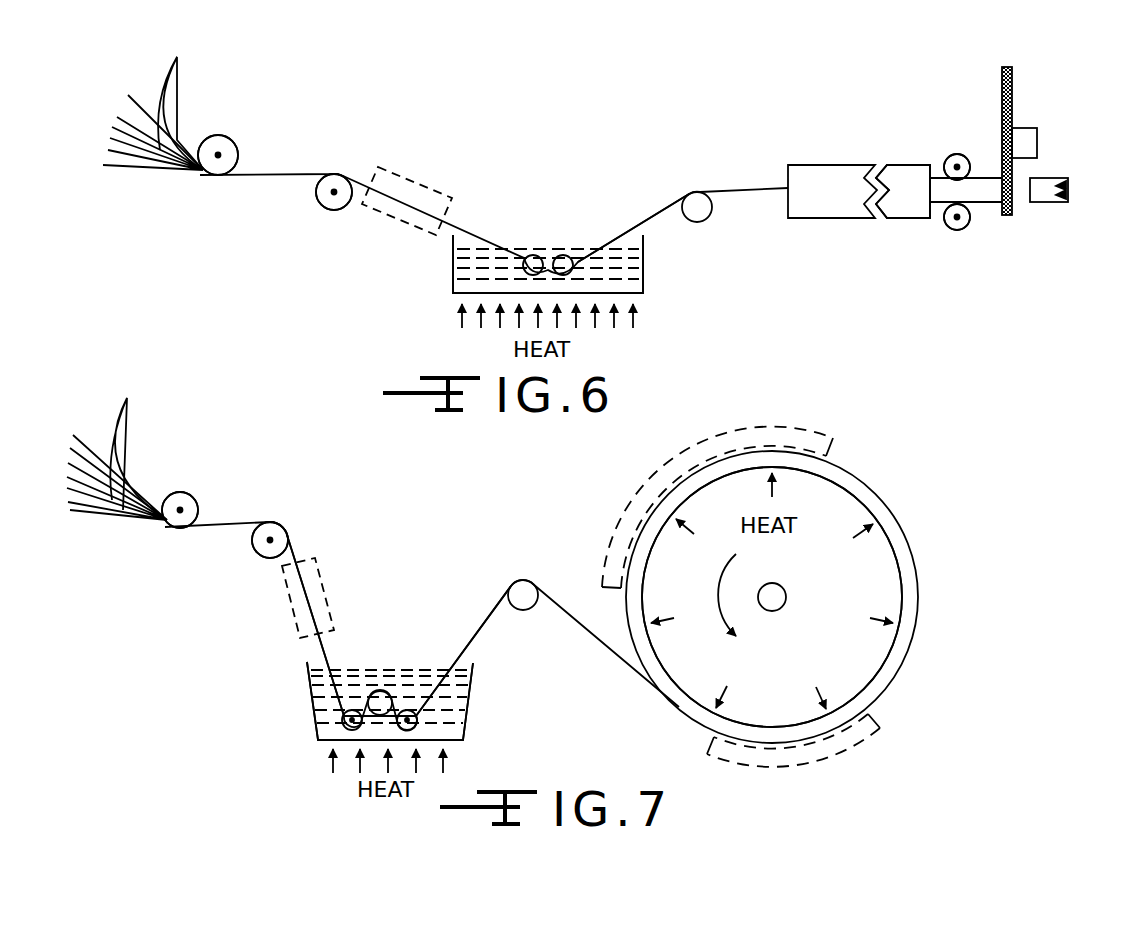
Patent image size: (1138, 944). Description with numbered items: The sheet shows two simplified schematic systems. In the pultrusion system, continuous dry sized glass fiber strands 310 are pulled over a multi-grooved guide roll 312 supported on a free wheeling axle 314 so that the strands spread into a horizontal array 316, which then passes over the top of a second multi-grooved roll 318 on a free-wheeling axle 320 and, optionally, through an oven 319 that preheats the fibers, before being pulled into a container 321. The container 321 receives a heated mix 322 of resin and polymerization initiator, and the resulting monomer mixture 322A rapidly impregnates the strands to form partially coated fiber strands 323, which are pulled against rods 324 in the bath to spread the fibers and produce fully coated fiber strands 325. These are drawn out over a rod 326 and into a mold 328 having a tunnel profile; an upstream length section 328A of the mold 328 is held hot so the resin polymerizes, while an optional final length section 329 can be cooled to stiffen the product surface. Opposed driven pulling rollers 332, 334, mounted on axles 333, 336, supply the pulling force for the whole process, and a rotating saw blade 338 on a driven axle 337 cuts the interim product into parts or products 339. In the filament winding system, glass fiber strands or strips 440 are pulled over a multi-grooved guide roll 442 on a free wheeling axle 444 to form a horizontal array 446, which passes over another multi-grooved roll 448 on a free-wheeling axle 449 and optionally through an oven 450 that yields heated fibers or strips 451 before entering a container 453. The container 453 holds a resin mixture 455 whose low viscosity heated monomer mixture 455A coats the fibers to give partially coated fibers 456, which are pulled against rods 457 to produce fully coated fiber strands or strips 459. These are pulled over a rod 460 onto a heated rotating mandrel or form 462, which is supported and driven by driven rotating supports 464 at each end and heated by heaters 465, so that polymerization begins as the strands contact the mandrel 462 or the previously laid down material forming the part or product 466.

In FIG. 6, the glass fiber strands 310 is at (153, 101).
In FIG. 6, the multi-grooved guide roll 312 is at (218, 153).
In FIG. 6, the free wheeling axle 314 is at (220, 153).
In FIG. 6, the horizontal array 316 is at (277, 173).
In FIG. 6, the multi-grooved roll 318 is at (317, 192).
In FIG. 6, the optional oven 319 is at (383, 170).
In FIG. 6, the free-wheeling axle 320 is at (334, 194).
In FIG. 6, the container 321 is at (453, 267).
In FIG. 6, the mix of resin and PI 322 is at (446, 256).
In FIG. 6, the monomer mixture 322A is at (548, 268).
In FIG. 6, the partially coated fiber strands 323 is at (520, 247).
In FIG. 6, the rods 324 is at (560, 257).
In FIG. 6, the fully coated fiber strands 325 is at (645, 220).
In FIG. 6, the rod 326 is at (712, 212).
In FIG. 6, the mold 328 is at (836, 174).
In FIG. 6, the upstream length section 328A is at (805, 163).
In FIG. 6, the final length section 329 is at (910, 163).
In FIG. 6, the driven pulling roller 332 is at (947, 225).
In FIG. 6, the axle 333 is at (957, 222).
In FIG. 6, the driven pulling roller 334 is at (948, 160).
In FIG. 6, the axle 336 is at (958, 166).
In FIG. 6, the driven axle 337 is at (1037, 130).
In FIG. 6, the rotating saw blade 338 is at (1012, 93).
In FIG. 6, the TSFRC parts or products 339 is at (1050, 177).
In FIG. 7, the glass fiber strands and/or strips 440 is at (117, 446).
In FIG. 7, the multi-grooved guide roll 442 is at (180, 508).
In FIG. 7, the free wheeling axle 444 is at (182, 508).
In FIG. 7, the horizontal array 446 is at (220, 520).
In FIG. 7, the multi-grooved roll 448 is at (262, 556).
In FIG. 7, the free-wheeling axle 449 is at (268, 540).
In FIG. 7, the optional oven 450 is at (325, 592).
In FIG. 7, the heated glass fibers/strips 451 is at (325, 652).
In FIG. 7, the container 453 is at (310, 703).
In FIG. 7, the resin mixture 455 is at (296, 684).
In FIG. 7, the heated monomer mixture 455A is at (463, 740).
In FIG. 7, the partially coated fibers 456 is at (317, 722).
In FIG. 7, the rods 457 is at (407, 710).
In FIG. 7, the fully coated fiber strands/strips 459 is at (477, 630).
In FIG. 7, the rod 460 is at (527, 610).
In FIG. 7, the rotating mandrel or form 462 is at (890, 533).
In FIG. 7, the driven rotating supports 464 is at (788, 597).
In FIG. 7, the heaters 465 is at (757, 428).
In FIG. 7, the TSFRC parts or product 466 is at (850, 481).